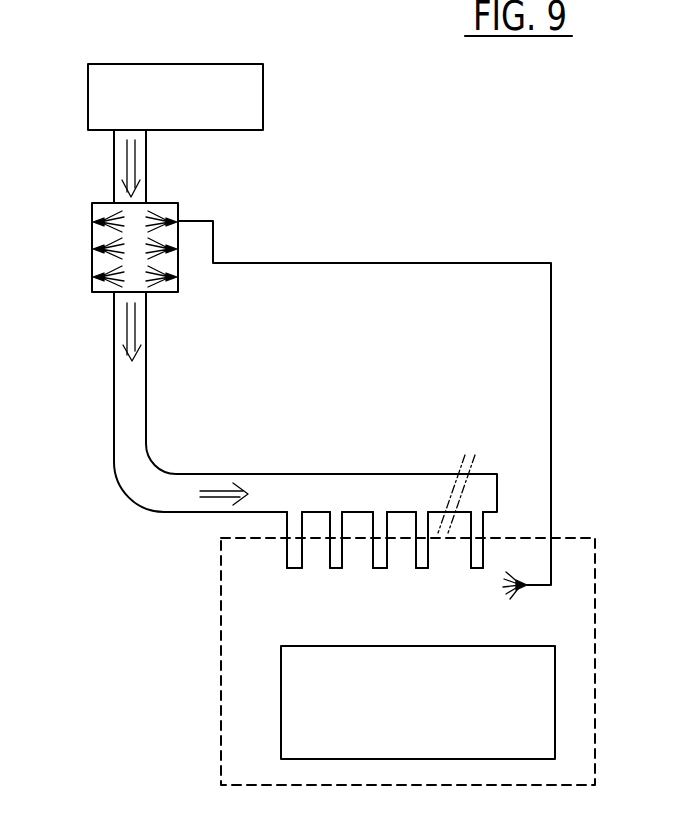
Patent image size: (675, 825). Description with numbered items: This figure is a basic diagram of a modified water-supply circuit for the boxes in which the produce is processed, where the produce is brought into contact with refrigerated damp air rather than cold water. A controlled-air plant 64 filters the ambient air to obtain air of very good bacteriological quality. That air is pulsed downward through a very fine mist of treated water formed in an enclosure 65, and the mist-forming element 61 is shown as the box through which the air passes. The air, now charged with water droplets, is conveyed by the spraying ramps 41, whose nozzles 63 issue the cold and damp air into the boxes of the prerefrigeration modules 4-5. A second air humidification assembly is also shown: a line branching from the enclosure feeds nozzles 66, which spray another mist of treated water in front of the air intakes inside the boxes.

The controlled-air plant 64 is at (258, 93).
The mixing chamber 61 is at (171, 218).
The enclosure 65 is at (98, 259).
The spraying ramps 41 is at (395, 483).
The nozzles 63 is at (290, 553).
The nozzles 66 is at (530, 586).
The prerefrigeration modules 4-5 is at (221, 738).